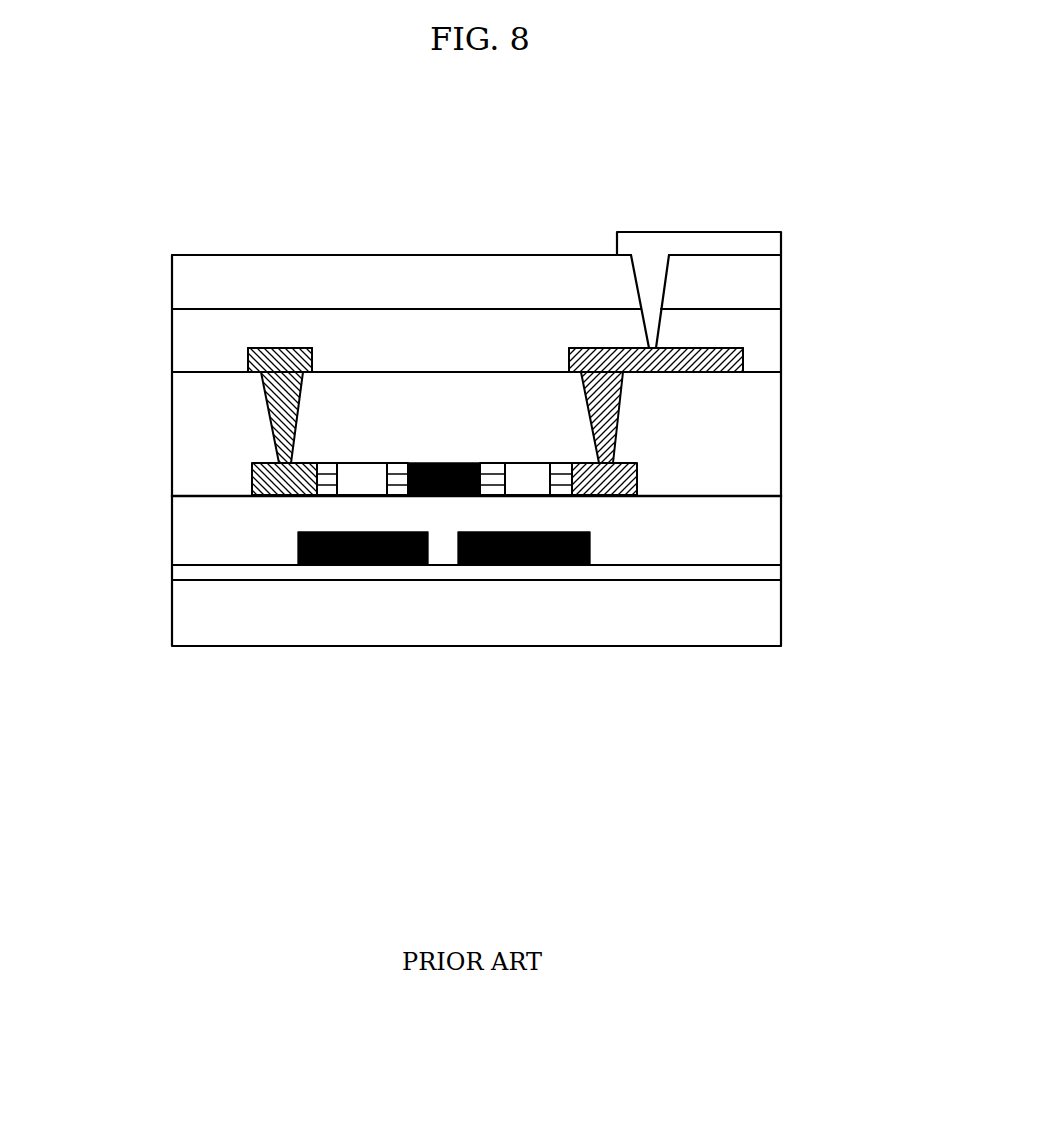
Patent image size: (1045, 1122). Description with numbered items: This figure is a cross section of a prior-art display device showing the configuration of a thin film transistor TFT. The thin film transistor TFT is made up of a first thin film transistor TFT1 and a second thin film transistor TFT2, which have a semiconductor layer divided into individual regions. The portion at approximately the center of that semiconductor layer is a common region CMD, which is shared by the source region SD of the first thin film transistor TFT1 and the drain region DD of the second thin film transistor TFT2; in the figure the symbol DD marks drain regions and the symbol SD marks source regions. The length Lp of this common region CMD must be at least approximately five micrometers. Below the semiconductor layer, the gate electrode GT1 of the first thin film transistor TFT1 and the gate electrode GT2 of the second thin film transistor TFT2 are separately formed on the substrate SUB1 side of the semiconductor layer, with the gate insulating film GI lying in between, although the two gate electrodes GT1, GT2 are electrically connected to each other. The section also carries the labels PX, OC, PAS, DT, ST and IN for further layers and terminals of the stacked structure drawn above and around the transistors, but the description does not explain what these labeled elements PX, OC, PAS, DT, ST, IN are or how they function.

The thin film transistor TFT is at (608, 157).
The first thin film transistor TFT1 is at (467, 228).
The second thin film transistor TFT2 is at (610, 233).
The pixel electrode PX is at (692, 248).
The overcoat layer OC is at (220, 280).
The passivation layer PAS is at (705, 326).
The drain terminal DT is at (280, 360).
The source terminal ST is at (720, 360).
The common region CMD is at (480, 378).
The length of the common region Lp is at (480, 425).
The drain region DD is at (278, 478).
The source region SD is at (608, 480).
The insulating layer IN is at (748, 438).
The gate insulating film GI is at (748, 537).
The substrate SUB1 is at (742, 620).
The gate electrode of the first thin film transistor GT1 is at (362, 565).
The gate electrode of the second thin film transistor GT2 is at (530, 565).